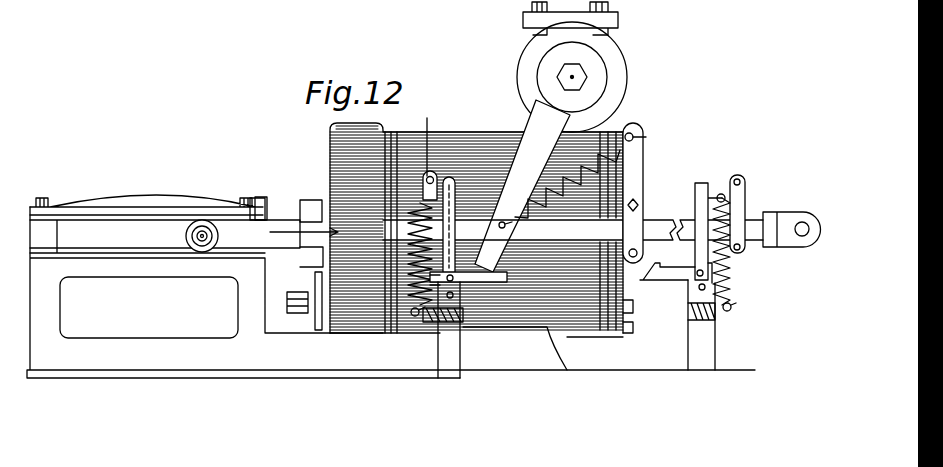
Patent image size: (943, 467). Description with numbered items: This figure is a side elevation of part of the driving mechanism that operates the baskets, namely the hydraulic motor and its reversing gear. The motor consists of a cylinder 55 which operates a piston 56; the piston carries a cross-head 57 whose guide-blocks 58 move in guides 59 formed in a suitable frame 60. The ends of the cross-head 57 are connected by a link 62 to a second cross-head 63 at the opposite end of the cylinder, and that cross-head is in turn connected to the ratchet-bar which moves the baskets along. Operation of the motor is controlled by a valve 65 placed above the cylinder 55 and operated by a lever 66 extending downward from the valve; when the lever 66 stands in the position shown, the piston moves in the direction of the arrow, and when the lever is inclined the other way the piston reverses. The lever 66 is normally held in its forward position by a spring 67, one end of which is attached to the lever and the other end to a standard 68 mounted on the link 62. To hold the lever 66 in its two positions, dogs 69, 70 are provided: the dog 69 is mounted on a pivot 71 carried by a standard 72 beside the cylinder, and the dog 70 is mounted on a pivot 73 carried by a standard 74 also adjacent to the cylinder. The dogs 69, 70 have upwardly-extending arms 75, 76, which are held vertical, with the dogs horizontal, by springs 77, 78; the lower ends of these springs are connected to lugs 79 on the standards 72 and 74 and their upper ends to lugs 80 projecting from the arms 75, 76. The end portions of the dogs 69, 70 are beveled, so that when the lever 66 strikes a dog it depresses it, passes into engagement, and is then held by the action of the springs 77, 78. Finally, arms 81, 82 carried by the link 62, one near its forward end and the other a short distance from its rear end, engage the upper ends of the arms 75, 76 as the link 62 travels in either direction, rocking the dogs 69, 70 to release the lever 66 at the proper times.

The cylinder 55 is at (450, 143).
The piston 56 is at (278, 212).
The cross-head 57 is at (202, 220).
The guide-blocks 58 is at (185, 229).
The guides 59 is at (103, 220).
The frame 60 is at (391, 292).
The link 62 is at (516, 231).
The cross-head 63 is at (783, 216).
The valve 65 is at (575, 77).
The lever 66 is at (541, 157).
The spring 67 is at (623, 157).
The standard 68 is at (634, 173).
The dog 69 is at (477, 284).
The dog 70 is at (667, 273).
The pivot 71 is at (377, 334).
The standard 72 is at (451, 364).
The pivot 73 is at (704, 273).
The standard 74 is at (704, 343).
The arm 75 is at (456, 212).
The arm 76 is at (694, 203).
The spring 77 is at (408, 230).
The spring 78 is at (731, 253).
The lugs 79 is at (423, 318).
The lugs 80 is at (730, 169).
The arm 81 is at (423, 189).
The arm 82 is at (747, 183).